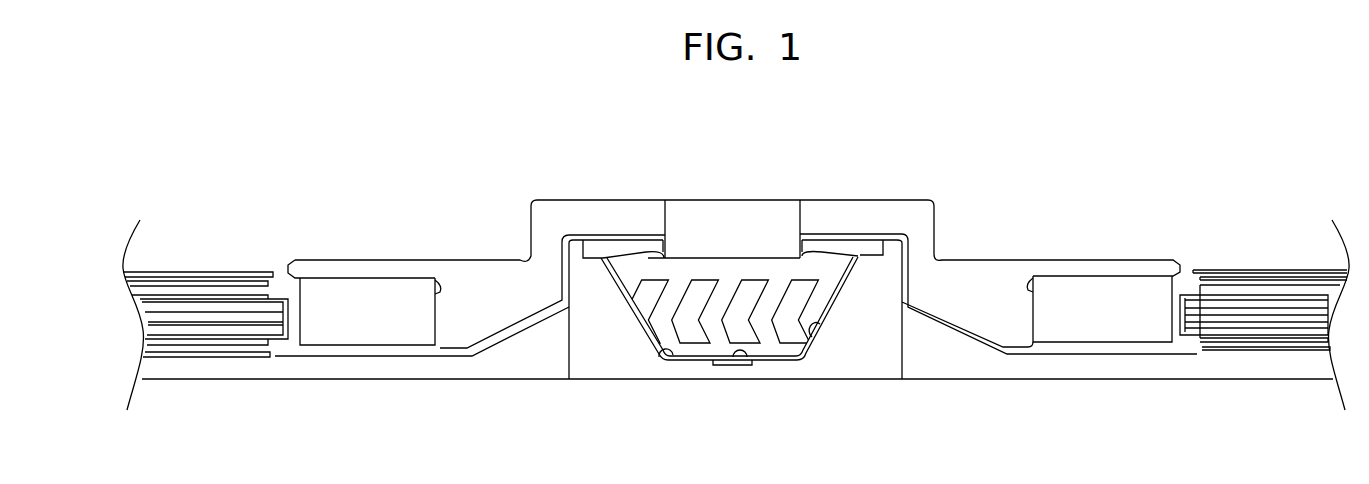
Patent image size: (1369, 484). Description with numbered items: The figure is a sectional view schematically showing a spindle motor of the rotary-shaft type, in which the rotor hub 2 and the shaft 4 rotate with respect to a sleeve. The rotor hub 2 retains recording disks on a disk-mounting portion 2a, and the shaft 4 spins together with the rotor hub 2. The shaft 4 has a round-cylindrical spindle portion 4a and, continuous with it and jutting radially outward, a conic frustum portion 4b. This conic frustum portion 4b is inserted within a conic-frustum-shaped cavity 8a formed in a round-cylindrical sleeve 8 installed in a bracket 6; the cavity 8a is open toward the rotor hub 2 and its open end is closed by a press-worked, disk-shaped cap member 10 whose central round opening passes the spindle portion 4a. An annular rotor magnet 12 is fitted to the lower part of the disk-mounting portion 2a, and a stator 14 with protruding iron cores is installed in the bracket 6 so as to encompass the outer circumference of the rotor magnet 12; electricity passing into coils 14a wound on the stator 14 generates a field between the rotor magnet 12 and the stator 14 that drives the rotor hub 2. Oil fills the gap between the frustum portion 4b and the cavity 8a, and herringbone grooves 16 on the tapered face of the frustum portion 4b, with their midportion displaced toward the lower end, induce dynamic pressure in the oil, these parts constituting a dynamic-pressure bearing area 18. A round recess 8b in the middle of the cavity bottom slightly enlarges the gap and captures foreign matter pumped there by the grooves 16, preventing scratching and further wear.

The rotor hub 2 is at (543, 210).
The disk-mounting portion 2a is at (368, 268).
The shaft 4 is at (675, 215).
The spindle portion 4a is at (733, 228).
The conic frustum portion 4b is at (695, 354).
The bracket 6 is at (1080, 364).
The sleeve 8 is at (585, 325).
The conic-frustum-shaped cavity 8a is at (666, 352).
The round recess 8b is at (743, 358).
The cap member 10 is at (792, 302).
The rotor magnet 12 is at (333, 322).
The stator 14 is at (1230, 327).
The coils 14a is at (202, 290).
The herringbone grooves 16 is at (815, 283).
The dynamic-pressure bearing area 18 is at (822, 331).